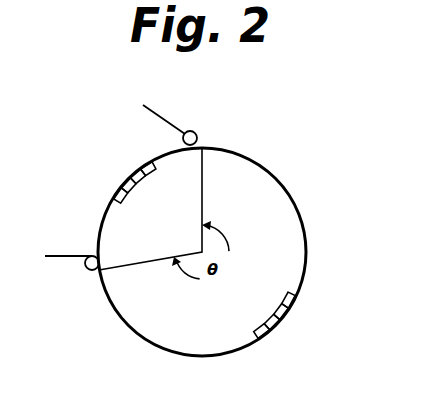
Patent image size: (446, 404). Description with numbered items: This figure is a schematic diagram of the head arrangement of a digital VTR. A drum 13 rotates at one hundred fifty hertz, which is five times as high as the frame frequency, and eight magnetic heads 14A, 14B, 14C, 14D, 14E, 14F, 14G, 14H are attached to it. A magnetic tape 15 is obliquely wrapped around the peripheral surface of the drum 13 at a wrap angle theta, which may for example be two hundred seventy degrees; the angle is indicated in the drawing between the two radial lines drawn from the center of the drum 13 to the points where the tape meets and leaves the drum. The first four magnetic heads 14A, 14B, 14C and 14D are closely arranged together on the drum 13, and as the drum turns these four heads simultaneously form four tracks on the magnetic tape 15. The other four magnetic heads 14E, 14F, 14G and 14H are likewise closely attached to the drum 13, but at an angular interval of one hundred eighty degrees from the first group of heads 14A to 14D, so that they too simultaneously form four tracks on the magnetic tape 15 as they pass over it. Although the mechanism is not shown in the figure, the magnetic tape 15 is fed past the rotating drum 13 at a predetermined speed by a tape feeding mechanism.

The drum 13 is at (283, 185).
The magnetic head 14A is at (117, 196).
The magnetic head 14B is at (121, 184).
The magnetic head 14C is at (130, 172).
The magnetic head 14D is at (138, 166).
The magnetic head 14E is at (292, 300).
The magnetic head 14F is at (286, 315).
The magnetic head 14G is at (277, 326).
The magnetic head 14H is at (264, 330).
The magnetic tape 15 is at (50, 258).